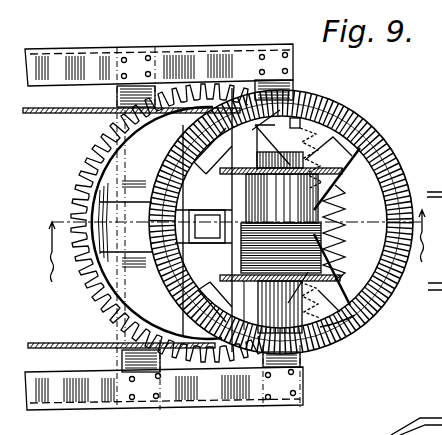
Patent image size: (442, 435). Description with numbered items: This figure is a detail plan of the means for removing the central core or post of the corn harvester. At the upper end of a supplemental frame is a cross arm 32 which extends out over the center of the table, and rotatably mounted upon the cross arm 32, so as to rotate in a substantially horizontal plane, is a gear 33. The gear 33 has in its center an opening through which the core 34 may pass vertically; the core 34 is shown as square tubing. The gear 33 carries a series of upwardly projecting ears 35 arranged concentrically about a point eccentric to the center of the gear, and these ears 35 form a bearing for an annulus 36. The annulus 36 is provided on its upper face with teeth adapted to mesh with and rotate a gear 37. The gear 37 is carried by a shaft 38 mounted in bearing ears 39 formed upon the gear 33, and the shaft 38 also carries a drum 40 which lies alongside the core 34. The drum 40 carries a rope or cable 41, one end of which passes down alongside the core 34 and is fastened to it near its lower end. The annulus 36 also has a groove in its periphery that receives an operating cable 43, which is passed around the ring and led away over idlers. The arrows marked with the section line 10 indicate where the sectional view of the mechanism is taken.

The section line 10— 10 is at (236, 244).
The cross arm 32 is at (61, 76).
The gear 33 is at (103, 291).
The core 34 is at (214, 210).
The ears 35 is at (220, 95).
The annulus 36 is at (401, 186).
The gear 37 is at (303, 361).
The shaft 38 is at (334, 338).
The bearing ears 39 is at (284, 131).
The drum 40 is at (332, 216).
The rope or cable 41 is at (283, 223).
The operating cable 43 is at (107, 113).